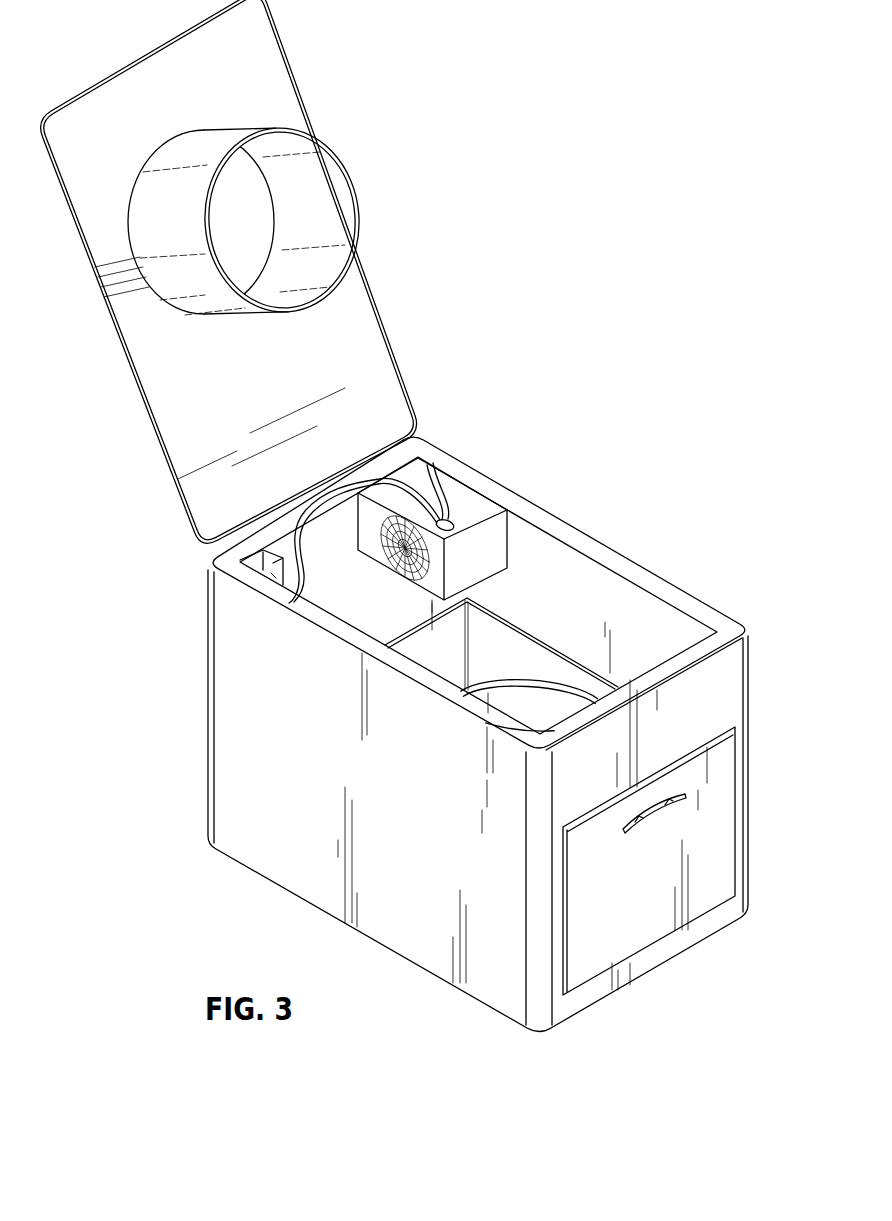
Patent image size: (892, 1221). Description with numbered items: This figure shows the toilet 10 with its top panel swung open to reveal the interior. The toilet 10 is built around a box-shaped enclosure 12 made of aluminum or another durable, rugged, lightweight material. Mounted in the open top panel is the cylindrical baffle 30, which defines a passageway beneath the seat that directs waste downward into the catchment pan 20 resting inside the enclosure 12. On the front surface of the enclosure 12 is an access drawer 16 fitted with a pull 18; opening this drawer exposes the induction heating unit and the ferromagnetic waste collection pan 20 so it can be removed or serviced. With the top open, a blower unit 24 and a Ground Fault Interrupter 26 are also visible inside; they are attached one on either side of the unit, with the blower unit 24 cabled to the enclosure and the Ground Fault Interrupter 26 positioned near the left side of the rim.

The toilet 10 is at (533, 224).
The enclosure 12 is at (415, 940).
The access drawer 16 is at (610, 938).
The pull 18 is at (653, 823).
The catchment pan 20 is at (537, 680).
The blower unit 24 is at (458, 502).
The Ground Fault Interrupter 26 is at (258, 563).
The cylindrical baffle 30 is at (312, 192).